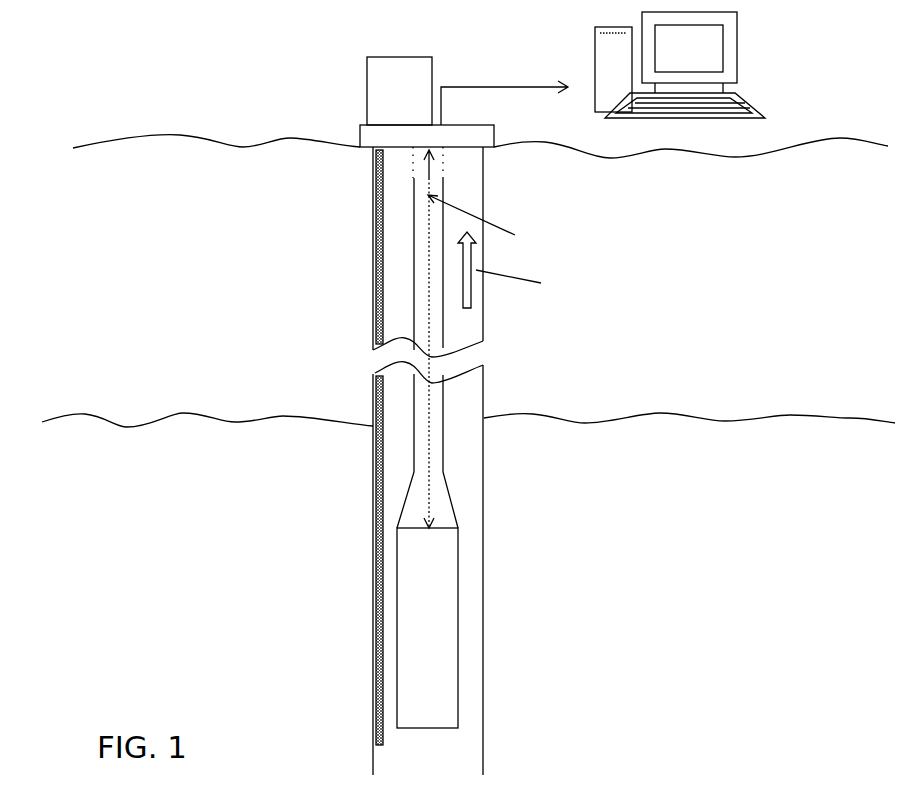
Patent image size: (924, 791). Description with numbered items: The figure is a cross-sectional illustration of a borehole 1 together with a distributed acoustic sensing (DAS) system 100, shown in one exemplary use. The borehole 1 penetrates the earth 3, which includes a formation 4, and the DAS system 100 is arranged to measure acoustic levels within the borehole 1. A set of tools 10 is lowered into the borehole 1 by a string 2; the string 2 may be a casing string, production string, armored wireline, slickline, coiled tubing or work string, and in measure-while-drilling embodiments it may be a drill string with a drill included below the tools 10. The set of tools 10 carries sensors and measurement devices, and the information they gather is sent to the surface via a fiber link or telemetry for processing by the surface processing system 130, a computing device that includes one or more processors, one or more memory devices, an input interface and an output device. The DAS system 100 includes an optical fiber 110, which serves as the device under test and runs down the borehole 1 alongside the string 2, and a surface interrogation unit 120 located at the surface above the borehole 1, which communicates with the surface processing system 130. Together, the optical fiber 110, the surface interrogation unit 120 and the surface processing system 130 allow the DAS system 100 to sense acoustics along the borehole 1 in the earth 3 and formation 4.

The borehole 1 is at (474, 193).
The string 2 is at (403, 256).
The earth 3 is at (768, 241).
The formation 4 is at (797, 506).
The set of tools 10 is at (459, 651).
The distributed acoustic sensing system 100 is at (194, 311).
The optical fiber 110 is at (368, 226).
The surface interrogation unit 120 is at (420, 107).
The surface processing system 130 is at (713, 56).